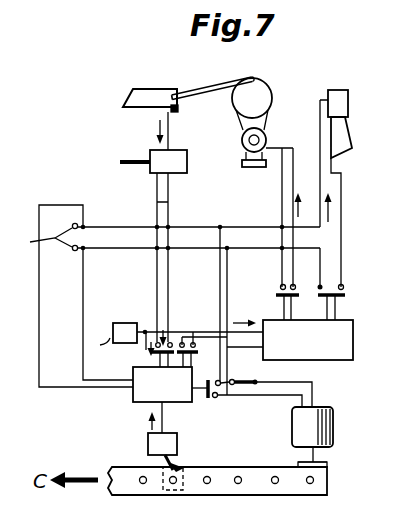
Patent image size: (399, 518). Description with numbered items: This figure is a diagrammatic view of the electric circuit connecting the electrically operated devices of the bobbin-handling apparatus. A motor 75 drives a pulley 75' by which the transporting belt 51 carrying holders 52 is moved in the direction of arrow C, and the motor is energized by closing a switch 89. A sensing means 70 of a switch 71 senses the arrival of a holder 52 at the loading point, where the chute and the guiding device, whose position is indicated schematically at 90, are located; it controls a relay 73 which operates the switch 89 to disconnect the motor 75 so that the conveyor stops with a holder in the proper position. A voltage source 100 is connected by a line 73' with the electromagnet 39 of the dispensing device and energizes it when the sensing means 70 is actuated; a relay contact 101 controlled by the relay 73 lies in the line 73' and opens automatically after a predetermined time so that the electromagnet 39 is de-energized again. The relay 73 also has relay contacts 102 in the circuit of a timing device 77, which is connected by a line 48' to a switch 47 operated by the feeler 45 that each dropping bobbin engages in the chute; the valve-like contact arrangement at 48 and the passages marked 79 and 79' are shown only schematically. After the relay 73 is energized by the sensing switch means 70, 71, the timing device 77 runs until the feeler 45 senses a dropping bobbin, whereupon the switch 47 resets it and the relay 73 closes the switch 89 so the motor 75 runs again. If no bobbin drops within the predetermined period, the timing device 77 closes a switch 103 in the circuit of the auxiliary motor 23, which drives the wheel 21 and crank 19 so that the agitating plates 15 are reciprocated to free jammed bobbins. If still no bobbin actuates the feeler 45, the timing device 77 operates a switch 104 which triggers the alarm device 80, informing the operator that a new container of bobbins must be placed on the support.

The plates 15 is at (153, 92).
The crank 19 is at (219, 86).
The wheel 21 is at (262, 92).
The auxiliary motor 23 is at (266, 139).
The electromagnet 39 is at (157, 164).
The feeler 45 is at (100, 345).
The switch 47 is at (127, 323).
The distributor valve contacts 48 is at (157, 307).
The line 48' is at (196, 319).
The transporting belt 51 is at (108, 467).
The holders 52 is at (142, 476).
The sensing means 70 is at (183, 462).
The switch 71 is at (171, 447).
The relay 73 is at (142, 378).
The line 73' is at (191, 210).
The motor 75 is at (318, 417).
The pulley 75' is at (295, 446).
The timing device 77 is at (284, 326).
The return spring direction 79 is at (142, 129).
The piston rod 79' is at (194, 131).
The alarm device 80 is at (333, 89).
The switch 89 is at (211, 397).
The guiding device position 90 is at (145, 465).
The voltage source 100 is at (33, 242).
The relay contact 101 is at (158, 330).
The relay contacts 102 is at (205, 354).
The switch 103 is at (271, 285).
The switch 104 is at (311, 281).